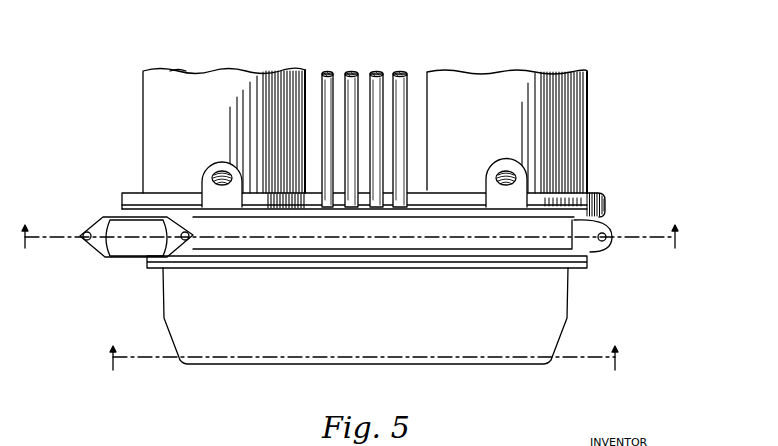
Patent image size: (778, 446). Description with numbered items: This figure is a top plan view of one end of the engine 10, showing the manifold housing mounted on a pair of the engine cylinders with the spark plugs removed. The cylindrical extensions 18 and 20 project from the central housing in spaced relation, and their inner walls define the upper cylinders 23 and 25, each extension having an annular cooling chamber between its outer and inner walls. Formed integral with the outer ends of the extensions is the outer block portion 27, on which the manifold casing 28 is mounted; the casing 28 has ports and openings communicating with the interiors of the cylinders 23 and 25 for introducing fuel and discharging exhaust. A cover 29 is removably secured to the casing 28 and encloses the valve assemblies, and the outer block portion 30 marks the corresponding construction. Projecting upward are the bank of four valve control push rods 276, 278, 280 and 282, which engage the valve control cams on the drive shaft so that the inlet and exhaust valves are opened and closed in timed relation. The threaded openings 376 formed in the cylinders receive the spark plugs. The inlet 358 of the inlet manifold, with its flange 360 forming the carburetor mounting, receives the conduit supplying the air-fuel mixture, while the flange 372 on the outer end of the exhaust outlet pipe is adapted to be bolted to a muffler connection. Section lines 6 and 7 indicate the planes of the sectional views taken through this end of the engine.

The heat exchanger assembly 10 is at (128, 78).
The cylindrical extension 18 is at (573, 105).
The cylindrical extension 20 is at (152, 120).
The upper cylinder 23 is at (493, 68).
The upper cylinder 25 is at (183, 76).
The outer block portion 27 is at (588, 238).
The manifold casing 28 is at (497, 243).
The cover 29 is at (177, 322).
The outer block portion 30 is at (602, 190).
The push rod 276 is at (323, 87).
The push rod 278 is at (352, 73).
The push rod 280 is at (378, 73).
The push rod 282 is at (402, 73).
The inlet of inlet manifold 358 is at (132, 247).
The flange 360 is at (103, 227).
The flange 372 is at (605, 222).
The threaded opening 376 is at (216, 170).
The section line 6- 6 is at (352, 236).
The section line 7- 7 is at (367, 358).